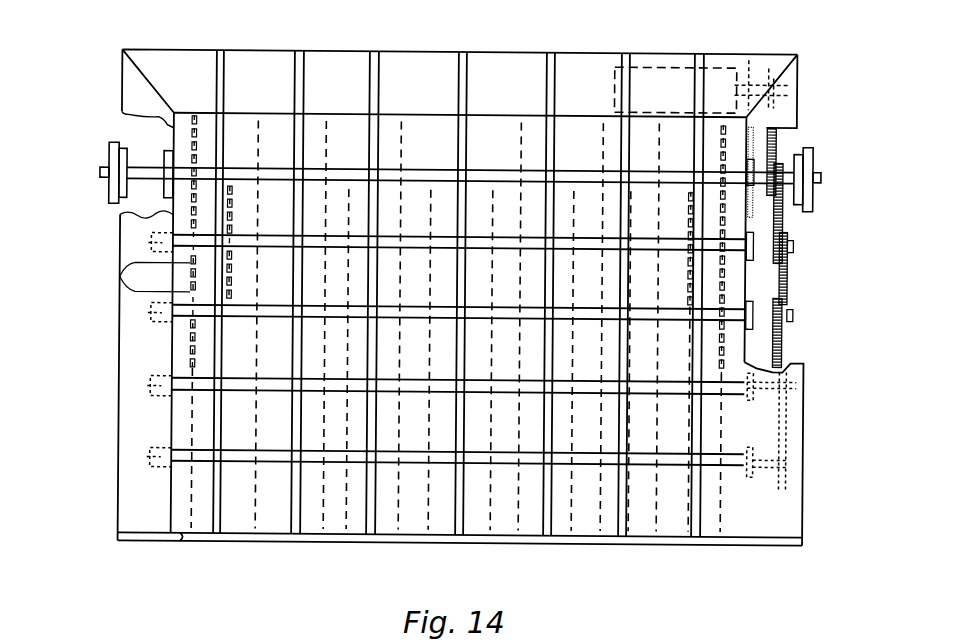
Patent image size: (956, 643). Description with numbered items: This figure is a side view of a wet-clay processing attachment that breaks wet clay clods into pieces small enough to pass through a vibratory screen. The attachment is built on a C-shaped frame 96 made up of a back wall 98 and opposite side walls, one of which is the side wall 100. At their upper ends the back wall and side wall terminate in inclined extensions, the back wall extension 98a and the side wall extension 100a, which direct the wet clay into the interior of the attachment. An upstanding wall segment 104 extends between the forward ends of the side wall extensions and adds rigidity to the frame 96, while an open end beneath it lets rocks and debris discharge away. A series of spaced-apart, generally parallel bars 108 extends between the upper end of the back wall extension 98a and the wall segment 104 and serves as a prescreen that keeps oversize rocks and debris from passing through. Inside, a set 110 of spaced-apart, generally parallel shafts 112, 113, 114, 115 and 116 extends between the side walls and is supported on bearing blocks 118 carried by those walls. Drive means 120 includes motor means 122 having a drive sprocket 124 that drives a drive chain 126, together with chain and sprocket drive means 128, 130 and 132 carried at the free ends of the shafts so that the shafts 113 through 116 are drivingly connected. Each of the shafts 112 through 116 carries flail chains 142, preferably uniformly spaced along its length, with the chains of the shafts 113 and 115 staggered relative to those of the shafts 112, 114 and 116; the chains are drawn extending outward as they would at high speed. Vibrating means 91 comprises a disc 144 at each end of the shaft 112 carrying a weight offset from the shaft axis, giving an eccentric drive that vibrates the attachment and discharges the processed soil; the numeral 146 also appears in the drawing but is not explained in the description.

The vibrating means 91 is at (99, 165).
The C-shaped frame 96 is at (246, 542).
The back wall 98 is at (508, 120).
The back wall extension 98a is at (415, 78).
The side wall 100 is at (180, 536).
The side wall extension 100a is at (130, 500).
The upstanding wall segment 104 is at (312, 545).
The bars 108 is at (225, 65).
The set of shafts 110 is at (234, 123).
The shaft 112 is at (340, 162).
The shaft 113 is at (147, 244).
The shaft 114 is at (147, 313).
The shaft 115 is at (147, 386).
The shaft 116 is at (147, 457).
The bearing blocks 118 is at (165, 380).
The drive means 120 is at (823, 127).
The motor means 122 is at (672, 65).
The drive sprocket 124 is at (778, 73).
The drive chain 126 is at (777, 132).
The chain and sprocket drive means 128 is at (789, 221).
The chain and sprocket drive means 130 is at (793, 290).
The chain and sprocket drive means 132 is at (790, 352).
The flail chains 142 is at (120, 277).
The disc 144 is at (103, 162).
The hub 146 is at (128, 197).